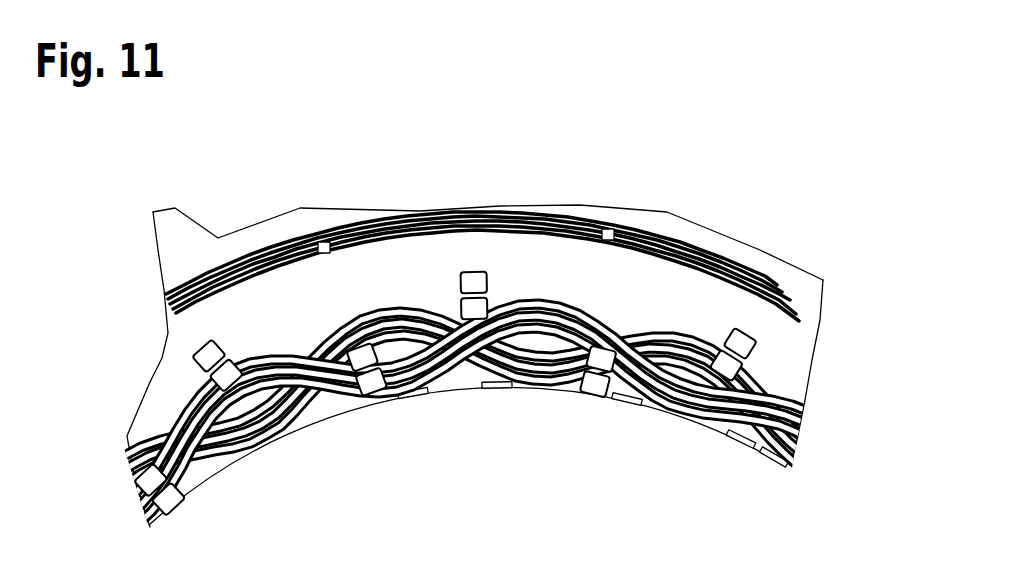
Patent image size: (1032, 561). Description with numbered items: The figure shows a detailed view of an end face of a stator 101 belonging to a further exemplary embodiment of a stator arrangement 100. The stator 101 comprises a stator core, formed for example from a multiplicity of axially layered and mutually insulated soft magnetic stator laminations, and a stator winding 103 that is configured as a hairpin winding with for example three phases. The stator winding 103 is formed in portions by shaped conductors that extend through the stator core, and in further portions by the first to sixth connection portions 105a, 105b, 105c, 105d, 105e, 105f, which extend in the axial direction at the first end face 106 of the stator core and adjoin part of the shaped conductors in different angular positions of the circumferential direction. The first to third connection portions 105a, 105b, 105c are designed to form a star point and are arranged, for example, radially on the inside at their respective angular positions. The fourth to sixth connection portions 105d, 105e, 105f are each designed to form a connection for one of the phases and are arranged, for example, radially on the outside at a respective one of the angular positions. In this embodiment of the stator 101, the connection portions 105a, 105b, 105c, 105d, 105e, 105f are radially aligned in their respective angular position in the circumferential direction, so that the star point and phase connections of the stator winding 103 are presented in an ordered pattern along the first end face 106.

The stator arrangement 100 is at (801, 129).
The stator 101 is at (717, 266).
The stator winding 103 is at (798, 386).
The first connection portion 105a is at (200, 501).
The second connection portion 105b is at (600, 402).
The third connection portion 105c is at (378, 404).
The fourth connection portion 105d is at (186, 326).
The fifth connection portion 105e is at (753, 319).
The sixth connection portion 105f is at (476, 266).
The first end face 106 is at (397, 266).